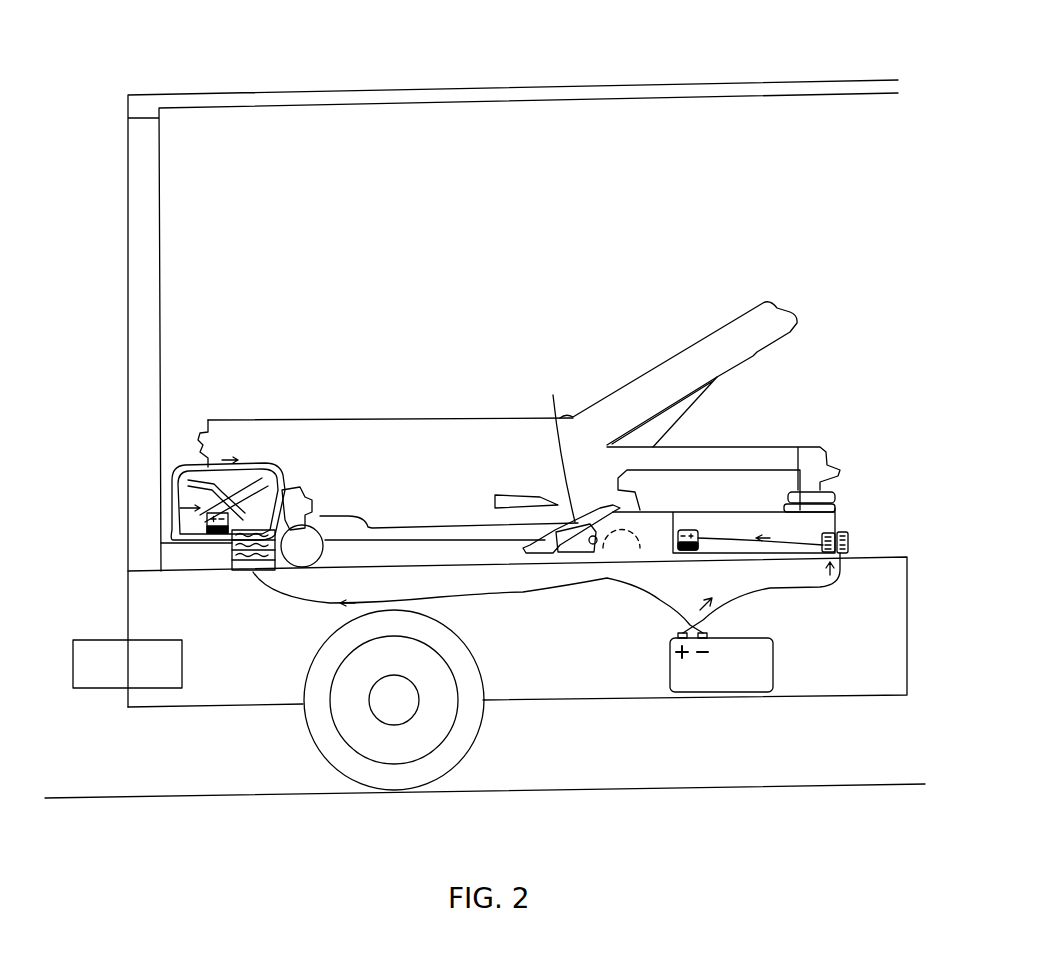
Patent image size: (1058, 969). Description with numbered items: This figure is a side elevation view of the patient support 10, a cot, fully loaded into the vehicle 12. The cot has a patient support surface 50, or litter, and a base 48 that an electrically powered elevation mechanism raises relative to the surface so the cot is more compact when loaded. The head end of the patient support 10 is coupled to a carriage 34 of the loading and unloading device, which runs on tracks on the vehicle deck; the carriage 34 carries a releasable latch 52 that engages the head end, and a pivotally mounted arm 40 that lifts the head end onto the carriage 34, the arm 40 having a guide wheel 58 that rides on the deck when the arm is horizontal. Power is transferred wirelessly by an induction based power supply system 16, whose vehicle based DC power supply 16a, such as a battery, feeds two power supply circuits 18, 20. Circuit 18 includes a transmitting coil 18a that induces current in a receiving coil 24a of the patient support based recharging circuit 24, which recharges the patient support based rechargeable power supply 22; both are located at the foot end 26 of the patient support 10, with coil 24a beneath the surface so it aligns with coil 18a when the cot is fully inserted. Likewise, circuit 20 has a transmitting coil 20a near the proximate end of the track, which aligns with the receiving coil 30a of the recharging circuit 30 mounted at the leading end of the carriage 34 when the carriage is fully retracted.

The patient support 10 is at (719, 309).
The vehicle 12 is at (488, 76).
The induction based power supply system 16 is at (607, 615).
The DC power supply 16a is at (712, 690).
The power supply circuit 18 is at (525, 593).
The transmitting coil 18a is at (248, 570).
The power supply circuit 20 is at (782, 588).
The transmitting coil 20a is at (838, 537).
The patient support based rechargeable power supply 22 is at (207, 527).
The patient support based recharging circuit 24 is at (268, 467).
The receiving coil 24a is at (300, 497).
The foot end 26 is at (222, 410).
The loading and unloading device based recharging circuit 30 is at (733, 513).
The receiving coil 30a is at (830, 532).
The carriage 34 is at (755, 510).
The arm 40 is at (558, 445).
The base 48 is at (699, 441).
The patient support surface 50 is at (398, 420).
The releasable latch 52 is at (807, 490).
The guide wheel 58 is at (663, 560).